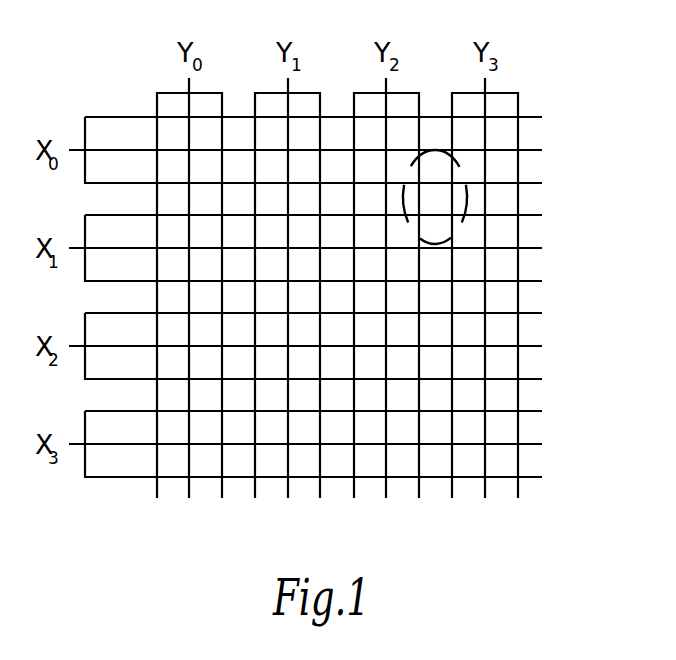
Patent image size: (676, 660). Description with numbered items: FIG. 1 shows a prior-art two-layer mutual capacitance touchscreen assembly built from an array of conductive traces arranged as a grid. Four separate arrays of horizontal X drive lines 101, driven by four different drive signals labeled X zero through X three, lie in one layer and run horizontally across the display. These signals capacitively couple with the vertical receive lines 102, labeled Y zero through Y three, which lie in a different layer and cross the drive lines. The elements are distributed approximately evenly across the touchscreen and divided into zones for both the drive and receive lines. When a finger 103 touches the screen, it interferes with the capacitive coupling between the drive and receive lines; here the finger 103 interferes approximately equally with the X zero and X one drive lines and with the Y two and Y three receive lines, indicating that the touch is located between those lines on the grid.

The horizontal X drive lines 101 is at (113, 480).
The vertical receive lines 102 is at (519, 100).
The finger 103 is at (462, 173).